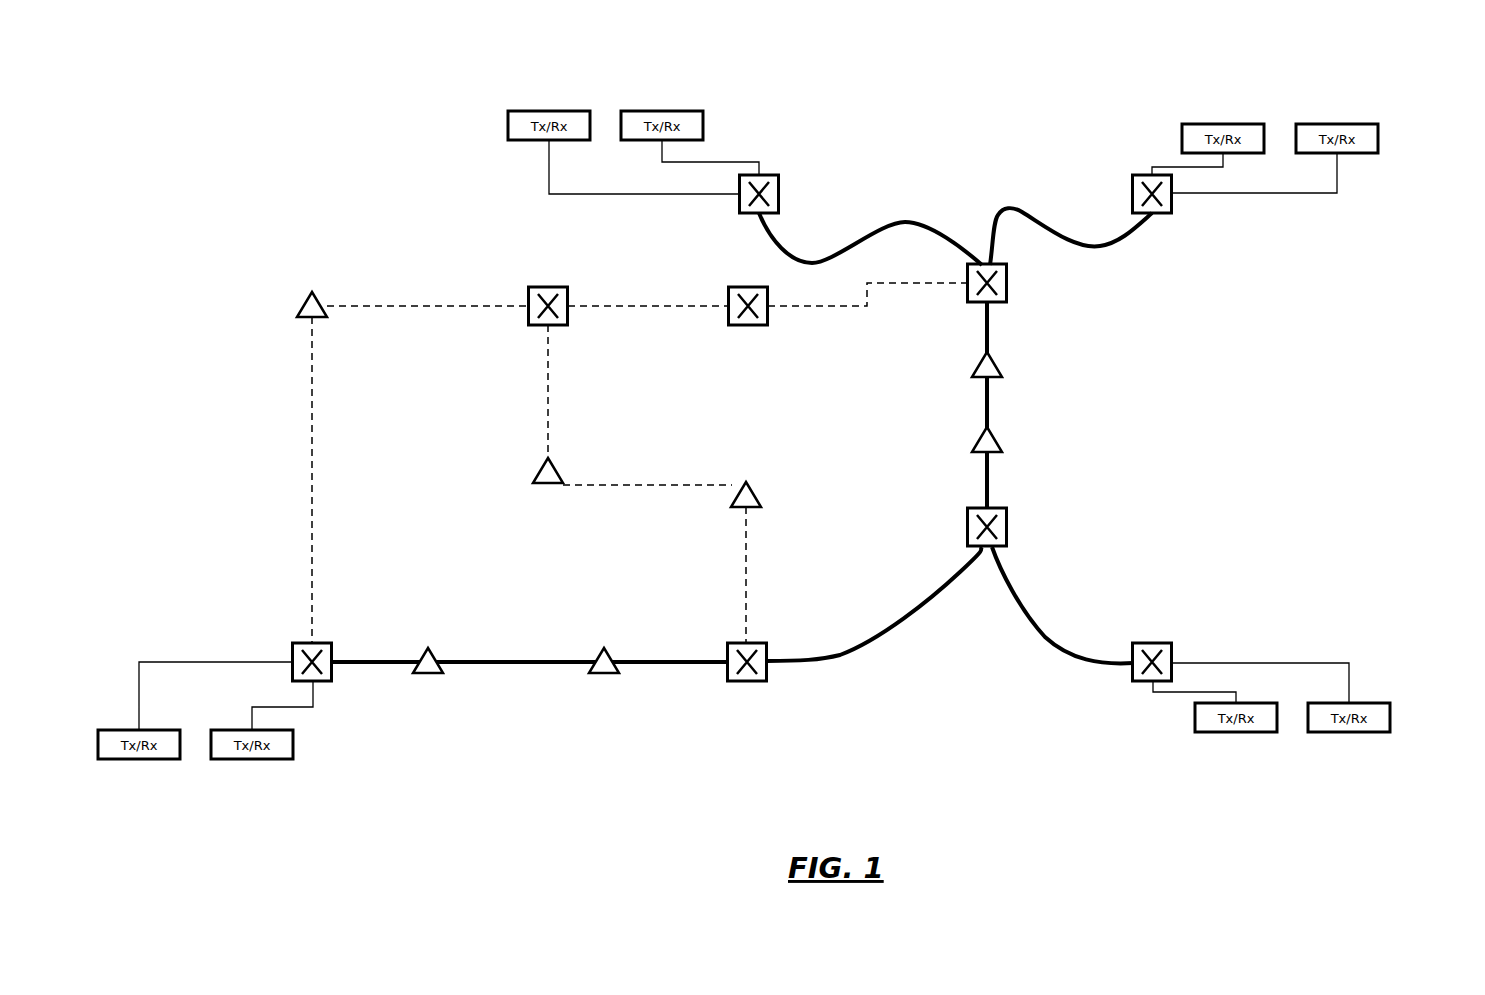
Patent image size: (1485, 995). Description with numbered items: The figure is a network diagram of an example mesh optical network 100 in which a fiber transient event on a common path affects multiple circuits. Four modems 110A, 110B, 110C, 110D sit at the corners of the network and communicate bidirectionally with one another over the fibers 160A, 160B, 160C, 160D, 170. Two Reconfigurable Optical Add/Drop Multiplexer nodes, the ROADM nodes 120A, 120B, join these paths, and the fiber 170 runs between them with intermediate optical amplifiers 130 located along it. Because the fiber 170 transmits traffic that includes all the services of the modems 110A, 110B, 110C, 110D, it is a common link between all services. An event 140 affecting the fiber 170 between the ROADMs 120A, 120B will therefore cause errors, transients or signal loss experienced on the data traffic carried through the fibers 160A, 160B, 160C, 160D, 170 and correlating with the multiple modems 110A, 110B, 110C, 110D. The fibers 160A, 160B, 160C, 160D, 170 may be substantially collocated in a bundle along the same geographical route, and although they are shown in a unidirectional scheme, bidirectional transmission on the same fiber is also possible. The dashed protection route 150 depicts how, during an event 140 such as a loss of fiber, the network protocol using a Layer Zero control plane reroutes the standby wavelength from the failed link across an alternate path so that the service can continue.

The mesh optical network 100 is at (951, 66).
The modem 110A is at (1215, 125).
The modem 110B is at (553, 112).
The modem 110C is at (1381, 703).
The modem 110D is at (295, 736).
The ROADM node 120A is at (1007, 293).
The ROADM node 120B is at (1007, 520).
The intermediate optical amplifier 130 is at (998, 357).
The event 140 is at (963, 420).
The protection route 150 is at (610, 307).
The fiber 160A is at (1013, 208).
The fiber 160B is at (904, 222).
The fiber 160C is at (1027, 600).
The fiber 160D is at (920, 608).
The fiber 170 is at (990, 336).